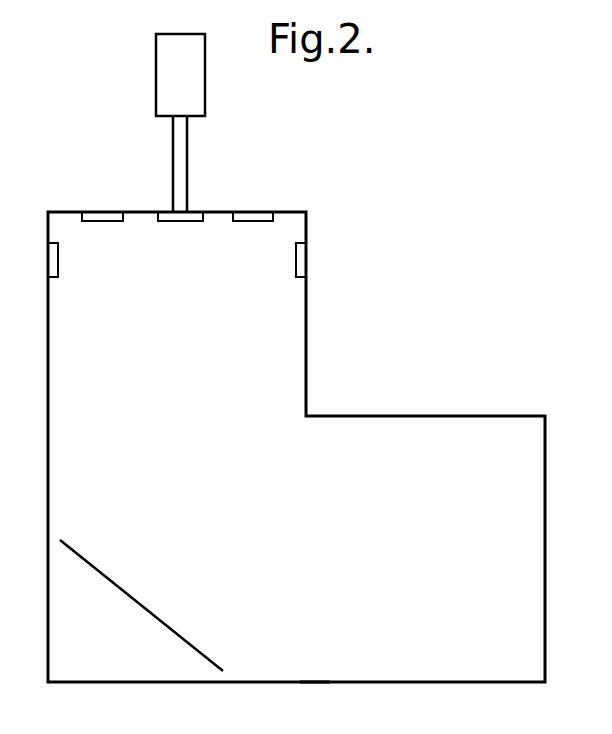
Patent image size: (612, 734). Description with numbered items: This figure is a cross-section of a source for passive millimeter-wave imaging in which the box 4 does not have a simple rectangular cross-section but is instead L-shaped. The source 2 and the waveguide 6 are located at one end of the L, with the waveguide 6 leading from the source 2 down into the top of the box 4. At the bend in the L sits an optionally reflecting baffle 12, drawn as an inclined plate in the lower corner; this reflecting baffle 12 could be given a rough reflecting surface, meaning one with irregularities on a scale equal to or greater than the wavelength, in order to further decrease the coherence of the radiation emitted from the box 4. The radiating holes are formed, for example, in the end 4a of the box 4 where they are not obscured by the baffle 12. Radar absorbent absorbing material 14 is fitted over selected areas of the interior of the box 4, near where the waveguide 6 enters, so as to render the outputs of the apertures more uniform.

The source 2 is at (205, 70).
The box 4 is at (373, 416).
The end of the box 4a is at (318, 680).
The waveguide 6 is at (187, 154).
The reflecting baffle 12 is at (145, 607).
The absorbing material 14 is at (100, 221).